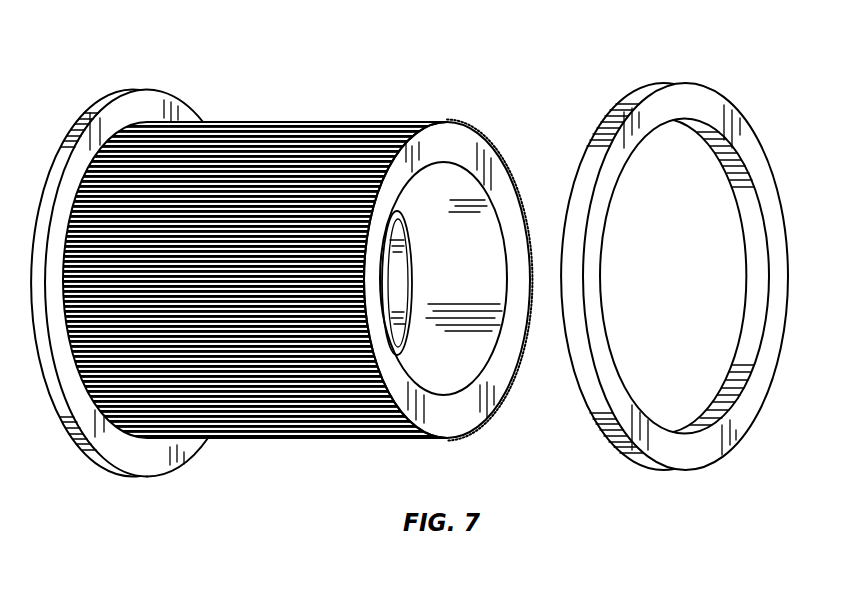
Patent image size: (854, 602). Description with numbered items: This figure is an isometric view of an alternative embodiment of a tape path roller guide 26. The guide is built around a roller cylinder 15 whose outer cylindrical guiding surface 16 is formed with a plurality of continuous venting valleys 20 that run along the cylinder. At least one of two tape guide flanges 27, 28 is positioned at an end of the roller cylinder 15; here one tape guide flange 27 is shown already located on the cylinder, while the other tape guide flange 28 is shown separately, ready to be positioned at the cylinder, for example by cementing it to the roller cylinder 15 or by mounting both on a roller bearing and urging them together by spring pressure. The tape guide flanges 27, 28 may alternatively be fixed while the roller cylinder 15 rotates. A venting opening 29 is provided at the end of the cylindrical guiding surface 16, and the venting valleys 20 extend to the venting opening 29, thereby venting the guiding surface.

The tape path roller guide 26 is at (434, 49).
The tape guide flange 27 is at (131, 89).
The tape guide flange 28 is at (668, 83).
The roller cylinder 15 is at (466, 122).
The cylindrical guiding surface 16 is at (369, 439).
The venting valleys 20 is at (342, 262).
The venting opening 29 is at (143, 445).